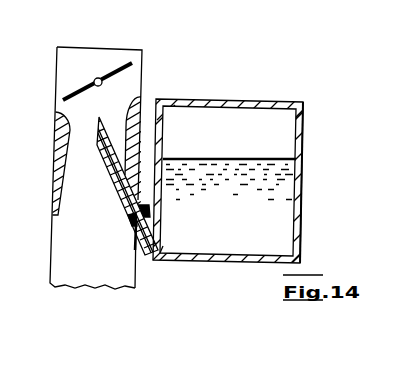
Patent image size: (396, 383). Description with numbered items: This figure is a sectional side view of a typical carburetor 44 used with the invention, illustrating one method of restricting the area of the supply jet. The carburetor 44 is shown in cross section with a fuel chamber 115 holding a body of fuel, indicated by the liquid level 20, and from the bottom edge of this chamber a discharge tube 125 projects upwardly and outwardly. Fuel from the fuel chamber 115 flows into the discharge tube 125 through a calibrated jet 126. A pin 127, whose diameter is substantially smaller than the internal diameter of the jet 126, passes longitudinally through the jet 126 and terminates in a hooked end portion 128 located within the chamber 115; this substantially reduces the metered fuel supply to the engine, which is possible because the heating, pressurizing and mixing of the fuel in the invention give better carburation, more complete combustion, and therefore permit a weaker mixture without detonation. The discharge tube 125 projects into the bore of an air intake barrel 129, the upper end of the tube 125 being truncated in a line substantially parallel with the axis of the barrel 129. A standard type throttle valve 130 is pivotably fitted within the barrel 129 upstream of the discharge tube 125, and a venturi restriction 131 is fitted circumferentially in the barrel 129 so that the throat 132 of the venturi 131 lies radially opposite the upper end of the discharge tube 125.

The liquid level 20 is at (265, 159).
The carburetor 44 is at (237, 101).
The fuel chamber 115 is at (302, 198).
The discharge tube 125 is at (127, 190).
The calibrated jet 126 is at (132, 225).
The pin 127 is at (108, 170).
The hooked end portion 128 is at (159, 248).
The air intake barrel 129 is at (143, 72).
The throttle valve 130 is at (100, 78).
The venturi restriction 131 is at (55, 113).
The throat 132 is at (143, 93).